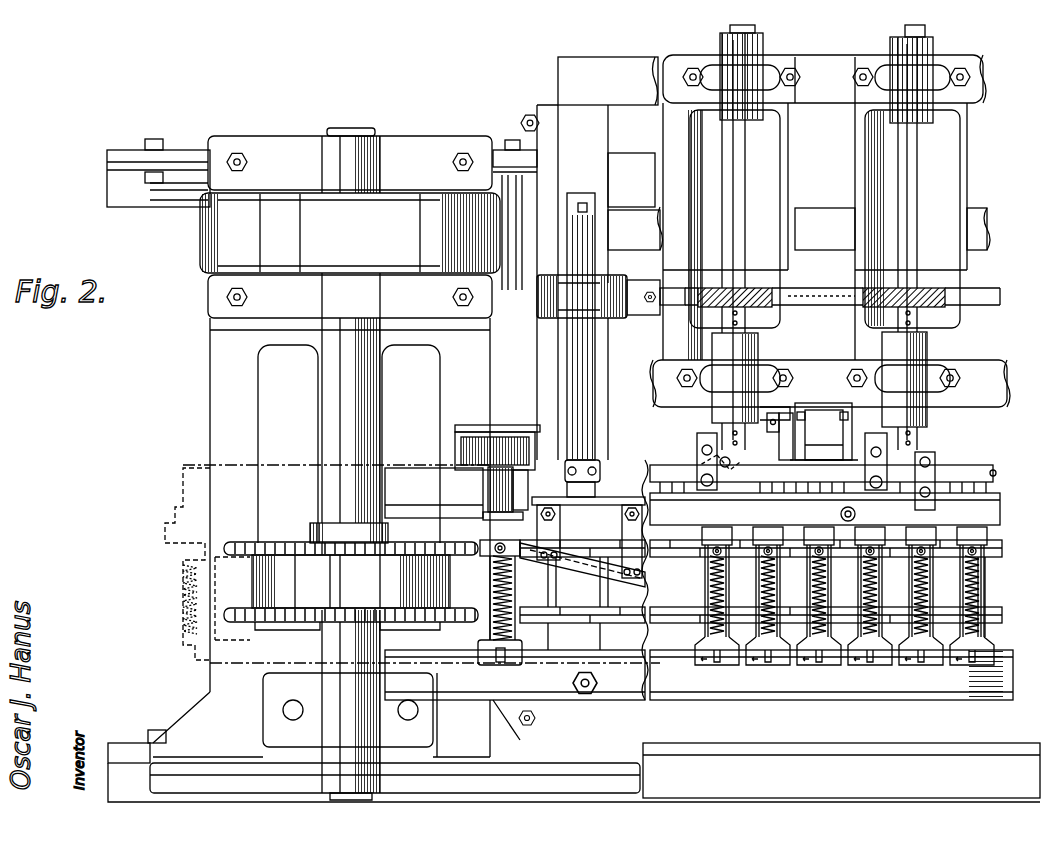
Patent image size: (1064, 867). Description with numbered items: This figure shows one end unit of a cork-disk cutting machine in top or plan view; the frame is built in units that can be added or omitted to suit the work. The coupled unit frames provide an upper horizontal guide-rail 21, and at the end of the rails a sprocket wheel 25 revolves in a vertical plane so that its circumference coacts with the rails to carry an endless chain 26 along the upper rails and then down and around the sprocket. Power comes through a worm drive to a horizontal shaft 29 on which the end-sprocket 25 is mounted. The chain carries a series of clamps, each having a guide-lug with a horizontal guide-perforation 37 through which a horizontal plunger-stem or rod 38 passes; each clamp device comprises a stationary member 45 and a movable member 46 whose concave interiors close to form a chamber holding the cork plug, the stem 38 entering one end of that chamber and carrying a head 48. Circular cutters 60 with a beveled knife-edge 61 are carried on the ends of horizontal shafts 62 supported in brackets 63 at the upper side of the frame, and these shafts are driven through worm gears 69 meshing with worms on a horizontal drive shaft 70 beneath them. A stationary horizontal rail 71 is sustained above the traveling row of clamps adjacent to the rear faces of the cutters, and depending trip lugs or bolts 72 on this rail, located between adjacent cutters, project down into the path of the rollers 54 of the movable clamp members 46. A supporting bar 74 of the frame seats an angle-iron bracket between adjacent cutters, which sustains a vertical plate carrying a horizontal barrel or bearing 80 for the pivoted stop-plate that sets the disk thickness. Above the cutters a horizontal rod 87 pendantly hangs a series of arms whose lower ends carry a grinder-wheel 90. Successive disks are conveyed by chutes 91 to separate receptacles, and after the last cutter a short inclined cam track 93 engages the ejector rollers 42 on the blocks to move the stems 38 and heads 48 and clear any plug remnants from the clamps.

The upper horizontal guide-rail 21 is at (822, 690).
The sprocket wheel 25 is at (287, 536).
The endless chain 26 is at (1000, 545).
The horizontal shaft 29 is at (325, 430).
The horizontal guide-perforation 37 is at (493, 578).
The plunger-stem or rod 38 is at (1000, 590).
The roller 42 is at (492, 545).
The stationary member 45 is at (500, 480).
The movable member 46 is at (525, 465).
The head 48 is at (456, 452).
The roller 54 is at (540, 497).
The cutter 60 is at (700, 462).
The beveled knife-edge 61 is at (940, 467).
The horizontal shaft 62 is at (746, 172).
The bracket 63 is at (792, 140).
The worm gear 69 is at (718, 303).
The horizontal drive shaft 70 is at (812, 306).
The horizontal rail 71 is at (825, 509).
The trip lug or bolt 72 is at (840, 514).
The supporting bar 74 is at (775, 432).
The horizontal barrel or bearing 80 is at (822, 405).
The horizontal rod 87 is at (638, 468).
The grinder-wheel 90 is at (698, 440).
The chute 91 is at (512, 427).
The cam track 93 is at (575, 570).